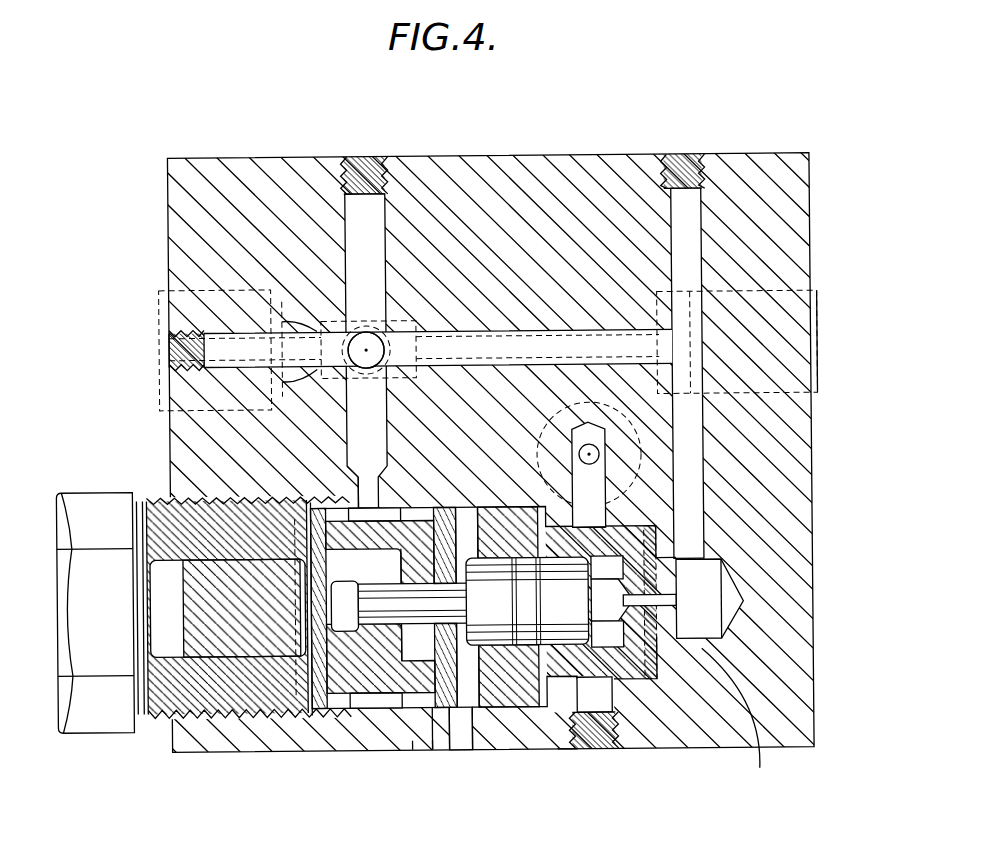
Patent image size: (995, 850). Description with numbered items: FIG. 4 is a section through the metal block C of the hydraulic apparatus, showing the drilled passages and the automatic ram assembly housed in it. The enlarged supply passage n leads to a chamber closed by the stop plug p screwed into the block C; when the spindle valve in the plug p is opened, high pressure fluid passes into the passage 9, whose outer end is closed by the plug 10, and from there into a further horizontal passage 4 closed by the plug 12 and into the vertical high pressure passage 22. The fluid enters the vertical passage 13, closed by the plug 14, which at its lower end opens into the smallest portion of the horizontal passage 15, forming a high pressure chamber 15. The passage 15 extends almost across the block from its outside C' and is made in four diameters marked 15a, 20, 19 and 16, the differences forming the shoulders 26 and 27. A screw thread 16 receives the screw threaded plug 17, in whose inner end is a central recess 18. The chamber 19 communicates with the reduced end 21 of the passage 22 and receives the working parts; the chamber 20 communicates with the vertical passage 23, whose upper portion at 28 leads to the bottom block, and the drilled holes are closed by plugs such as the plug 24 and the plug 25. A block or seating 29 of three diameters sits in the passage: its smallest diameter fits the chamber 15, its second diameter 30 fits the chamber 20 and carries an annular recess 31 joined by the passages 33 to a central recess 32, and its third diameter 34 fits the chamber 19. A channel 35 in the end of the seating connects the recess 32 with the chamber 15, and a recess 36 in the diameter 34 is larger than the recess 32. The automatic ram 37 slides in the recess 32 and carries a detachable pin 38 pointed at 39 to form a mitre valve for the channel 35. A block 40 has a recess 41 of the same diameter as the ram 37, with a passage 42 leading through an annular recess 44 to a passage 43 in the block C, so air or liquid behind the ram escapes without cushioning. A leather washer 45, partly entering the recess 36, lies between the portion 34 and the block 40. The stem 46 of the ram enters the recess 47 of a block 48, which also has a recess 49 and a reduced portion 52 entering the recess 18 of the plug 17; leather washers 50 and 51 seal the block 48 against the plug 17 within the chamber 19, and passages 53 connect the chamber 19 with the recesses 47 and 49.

The passage 4 is at (464, 340).
The passage 9 is at (348, 349).
The plug 10 is at (367, 331).
The plug 12 is at (170, 344).
The vertical passage 13 is at (687, 373).
The plug 14 is at (711, 156).
The horizontal passage 15 is at (718, 578).
The largest diameter portion of passage 15 15a is at (749, 715).
The screw thread 16 is at (248, 782).
The screw threaded plug 17 is at (295, 786).
The central recess 18 is at (228, 609).
The chamber 19 is at (346, 481).
The reduced portion or chamber 20 is at (632, 527).
The reduced end 21 is at (385, 488).
The vertical high pressure passage 22 is at (348, 236).
The vertical passage 23 is at (589, 465).
The plug 24 is at (375, 156).
The plug 25 is at (592, 752).
The shoulder 26 is at (556, 752).
The shoulder 27 is at (650, 527).
The upper portion of passage 23 28 is at (599, 455).
The block or seating 29 is at (672, 558).
The second diameter of block 29 30 is at (660, 702).
The annular recess 31 is at (594, 694).
The central recess 32 is at (607, 634).
The passages 33 is at (589, 517).
The third diameter of block 29 34 is at (505, 728).
The channel 35 is at (645, 604).
The recess 36 is at (508, 507).
The automatic ram 37 is at (527, 601).
The detachable pin 38 is at (612, 600).
The pointed end 39 is at (607, 567).
The block 40 is at (460, 507).
The recess 41 is at (470, 507).
The passage 42 is at (470, 731).
The passage 43 is at (450, 707).
The annular recess 44 is at (415, 750).
The leather washer 45 is at (478, 752).
The stem 46 is at (413, 603).
The recess 47 is at (344, 606).
The block 48 is at (380, 606).
The recess 49 is at (375, 516).
The leather washer 50 is at (410, 729).
The leather washer 51 is at (334, 617).
The reduced portion of block 48 52 is at (242, 608).
The passages 53 is at (376, 700).
The block C is at (497, 464).
The outside of the block C' is at (144, 766).
The enlarged supply passage n is at (420, 349).
The stop plug p is at (160, 384).